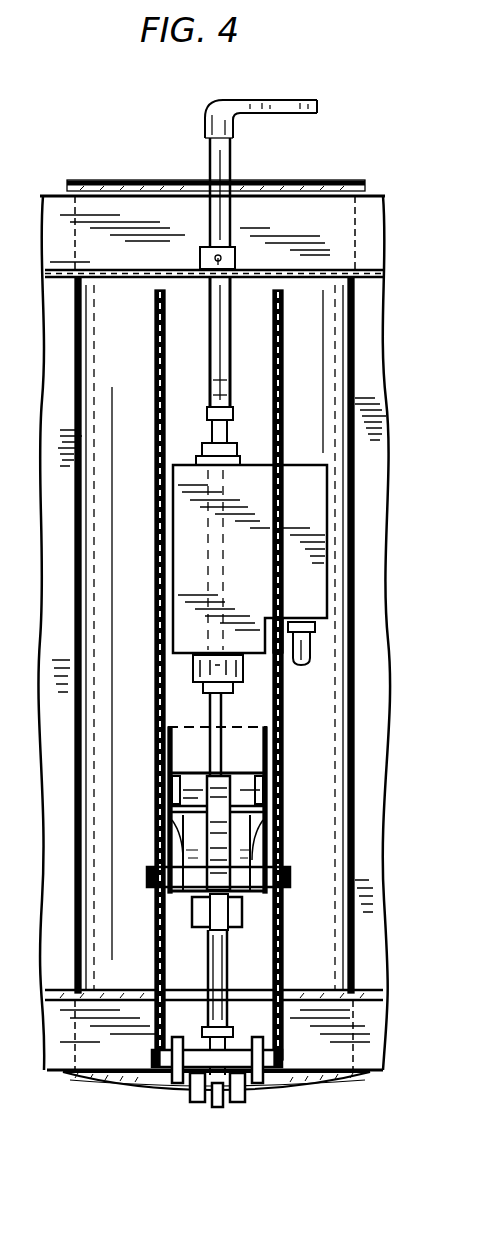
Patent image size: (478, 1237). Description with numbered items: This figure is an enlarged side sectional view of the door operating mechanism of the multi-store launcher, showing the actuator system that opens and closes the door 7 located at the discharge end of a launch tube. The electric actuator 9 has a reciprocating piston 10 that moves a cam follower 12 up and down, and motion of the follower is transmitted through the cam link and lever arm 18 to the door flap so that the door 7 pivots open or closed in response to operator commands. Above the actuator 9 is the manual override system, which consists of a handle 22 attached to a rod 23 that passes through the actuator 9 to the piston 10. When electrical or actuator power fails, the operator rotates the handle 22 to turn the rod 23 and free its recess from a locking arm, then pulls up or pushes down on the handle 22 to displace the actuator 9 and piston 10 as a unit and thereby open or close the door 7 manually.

The handle 22 is at (322, 88).
The rod 23 is at (231, 157).
The electric actuator 9 is at (243, 496).
The reciprocating piston 10 is at (240, 674).
The cam follower 12 is at (243, 792).
The lever arm 18 is at (207, 965).
The door 7 is at (268, 1097).